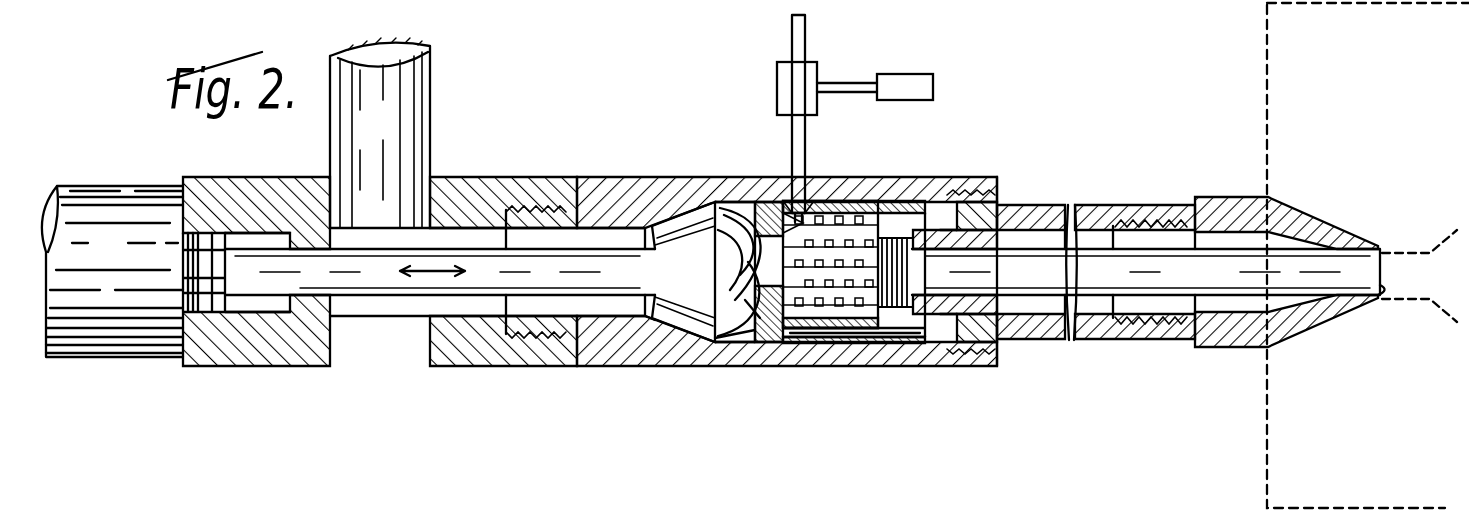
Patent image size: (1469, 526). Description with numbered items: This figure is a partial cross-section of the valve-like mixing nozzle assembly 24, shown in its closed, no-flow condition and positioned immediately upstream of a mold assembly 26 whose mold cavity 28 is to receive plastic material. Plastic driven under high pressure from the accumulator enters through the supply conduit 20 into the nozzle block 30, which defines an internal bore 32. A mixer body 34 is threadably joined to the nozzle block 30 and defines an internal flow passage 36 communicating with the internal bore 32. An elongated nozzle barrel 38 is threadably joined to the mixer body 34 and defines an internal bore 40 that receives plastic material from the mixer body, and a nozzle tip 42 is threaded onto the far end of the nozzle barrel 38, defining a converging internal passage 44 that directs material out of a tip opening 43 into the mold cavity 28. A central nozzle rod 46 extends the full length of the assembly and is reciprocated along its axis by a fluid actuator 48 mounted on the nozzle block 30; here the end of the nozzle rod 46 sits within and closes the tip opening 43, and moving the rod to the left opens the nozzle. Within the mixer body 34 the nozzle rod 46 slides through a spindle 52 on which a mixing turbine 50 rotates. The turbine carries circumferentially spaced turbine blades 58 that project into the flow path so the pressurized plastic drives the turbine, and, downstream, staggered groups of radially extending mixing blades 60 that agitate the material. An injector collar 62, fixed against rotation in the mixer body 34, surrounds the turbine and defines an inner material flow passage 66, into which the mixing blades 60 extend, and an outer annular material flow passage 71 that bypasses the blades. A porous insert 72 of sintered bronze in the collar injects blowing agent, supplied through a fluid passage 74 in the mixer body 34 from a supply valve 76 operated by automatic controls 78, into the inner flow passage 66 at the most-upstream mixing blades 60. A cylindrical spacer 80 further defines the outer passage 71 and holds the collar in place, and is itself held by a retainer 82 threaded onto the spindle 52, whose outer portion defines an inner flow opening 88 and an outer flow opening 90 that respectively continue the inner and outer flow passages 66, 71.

The supply conduit 20 is at (400, 85).
The mixing nozzle assembly 24 is at (995, 159).
The mold assembly 26 is at (1254, 120).
The mold cavity 28 is at (1456, 327).
The nozzle block 30 is at (281, 353).
The internal bore 32 is at (412, 316).
The mixer body 34 is at (712, 362).
The internal flow passage 36 is at (660, 318).
The nozzle barrel 38 is at (1040, 333).
The internal bore 40 is at (1103, 307).
The nozzle tip 42 is at (1290, 223).
The tip opening 43 is at (1380, 297).
The converging internal passage 44 is at (1270, 310).
The nozzle rod 46 is at (802, 272).
The fluid actuator 48 is at (113, 352).
The mixing turbine 50 is at (712, 320).
The spindle 52 is at (677, 256).
The turbine blades 58 is at (703, 272).
The mixing blades 60 is at (756, 272).
The injector collar 62 is at (850, 203).
The inner material flow passage 66 is at (786, 215).
The outer annular material flow passage 71 is at (775, 340).
The porous insert 72 is at (806, 210).
The fluid passage 74 is at (801, 133).
The supply valve 76 is at (786, 77).
The automatic controls 78 is at (896, 80).
The cylindrical spacer 80 is at (840, 345).
The retainer 82 is at (980, 235).
The inner flow opening 88 is at (902, 330).
The outer flow opening 90 is at (920, 335).